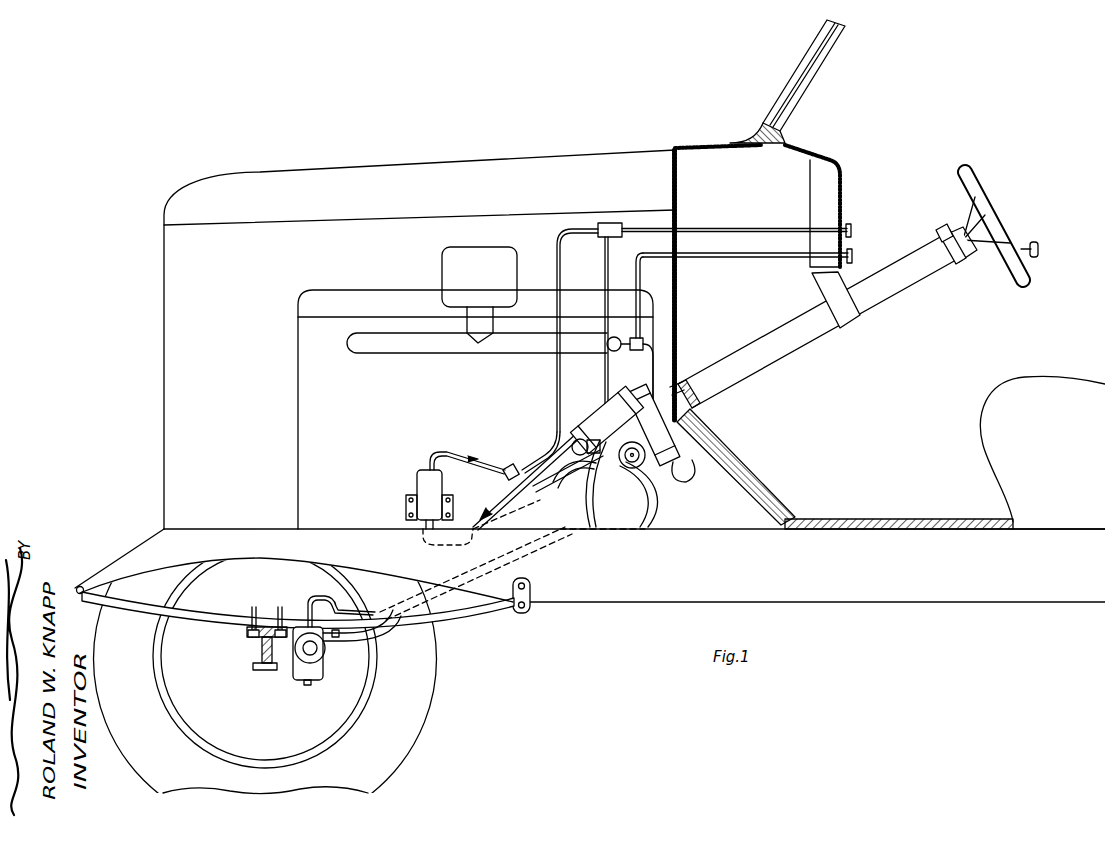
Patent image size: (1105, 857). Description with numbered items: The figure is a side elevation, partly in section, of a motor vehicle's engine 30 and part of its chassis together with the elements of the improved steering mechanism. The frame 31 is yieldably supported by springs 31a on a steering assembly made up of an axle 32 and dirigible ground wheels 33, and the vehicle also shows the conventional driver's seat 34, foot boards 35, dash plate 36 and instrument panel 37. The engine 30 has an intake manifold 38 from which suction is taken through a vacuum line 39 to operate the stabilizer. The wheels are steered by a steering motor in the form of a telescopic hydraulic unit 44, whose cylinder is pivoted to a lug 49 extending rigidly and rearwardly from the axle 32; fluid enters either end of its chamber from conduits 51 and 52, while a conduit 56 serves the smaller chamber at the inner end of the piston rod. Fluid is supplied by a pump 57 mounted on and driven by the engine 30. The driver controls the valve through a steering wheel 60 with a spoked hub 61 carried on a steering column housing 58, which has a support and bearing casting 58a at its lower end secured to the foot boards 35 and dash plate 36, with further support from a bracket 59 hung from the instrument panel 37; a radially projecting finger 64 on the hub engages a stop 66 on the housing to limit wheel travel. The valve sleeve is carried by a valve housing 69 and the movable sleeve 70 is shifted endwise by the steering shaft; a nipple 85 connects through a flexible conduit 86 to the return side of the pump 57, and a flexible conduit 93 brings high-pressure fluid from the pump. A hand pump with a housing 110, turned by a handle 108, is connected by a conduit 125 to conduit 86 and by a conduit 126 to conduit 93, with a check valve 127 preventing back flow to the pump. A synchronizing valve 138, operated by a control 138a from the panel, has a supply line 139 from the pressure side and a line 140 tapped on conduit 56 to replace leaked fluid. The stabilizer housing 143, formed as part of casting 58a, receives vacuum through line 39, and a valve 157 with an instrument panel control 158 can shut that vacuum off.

The engine 30 is at (419, 339).
The frame 31 is at (1005, 596).
The springs 31a is at (150, 610).
The axle 32 is at (263, 670).
The dirigible ground wheels 33 is at (397, 750).
The driver's seat 34 is at (1065, 392).
The foot boards 35 is at (778, 502).
The dash plate 36 is at (676, 290).
The instrument panel 37 is at (843, 182).
The intake manifold 38 is at (372, 346).
The vacuum line 39 is at (652, 364).
The telescopic hydraulic unit 44 is at (330, 653).
The lug 49 is at (290, 667).
The conduit 51 is at (380, 625).
The conduit 52 is at (618, 527).
The conduit 56 is at (318, 598).
The pump 57 is at (420, 490).
The steering column housing 58 is at (760, 364).
The support and bearing casting 58a is at (677, 377).
The bracket 59 is at (853, 322).
The steering wheel 60 is at (992, 176).
The spoked hub 61 is at (968, 248).
The finger 64 is at (957, 265).
The stop 66 is at (946, 226).
The valve housing 69 is at (612, 418).
The movable sleeve 70 is at (627, 469).
The nipple 85 is at (690, 412).
The flexible conduit 86 is at (492, 527).
The flexible conduit 93 is at (438, 454).
The handle 108 is at (1023, 236).
The hand pump housing 110 is at (583, 438).
The conduit 125 is at (562, 490).
The conduit 126 is at (548, 436).
The check valve 127 is at (505, 476).
The synchronizing valve 138 is at (610, 223).
The control 138a is at (853, 226).
The supply line 139 is at (556, 385).
The line 140 is at (605, 275).
The stabilizer housing 143 is at (672, 450).
The valve 157 is at (645, 340).
The instrument panel control 158 is at (855, 256).